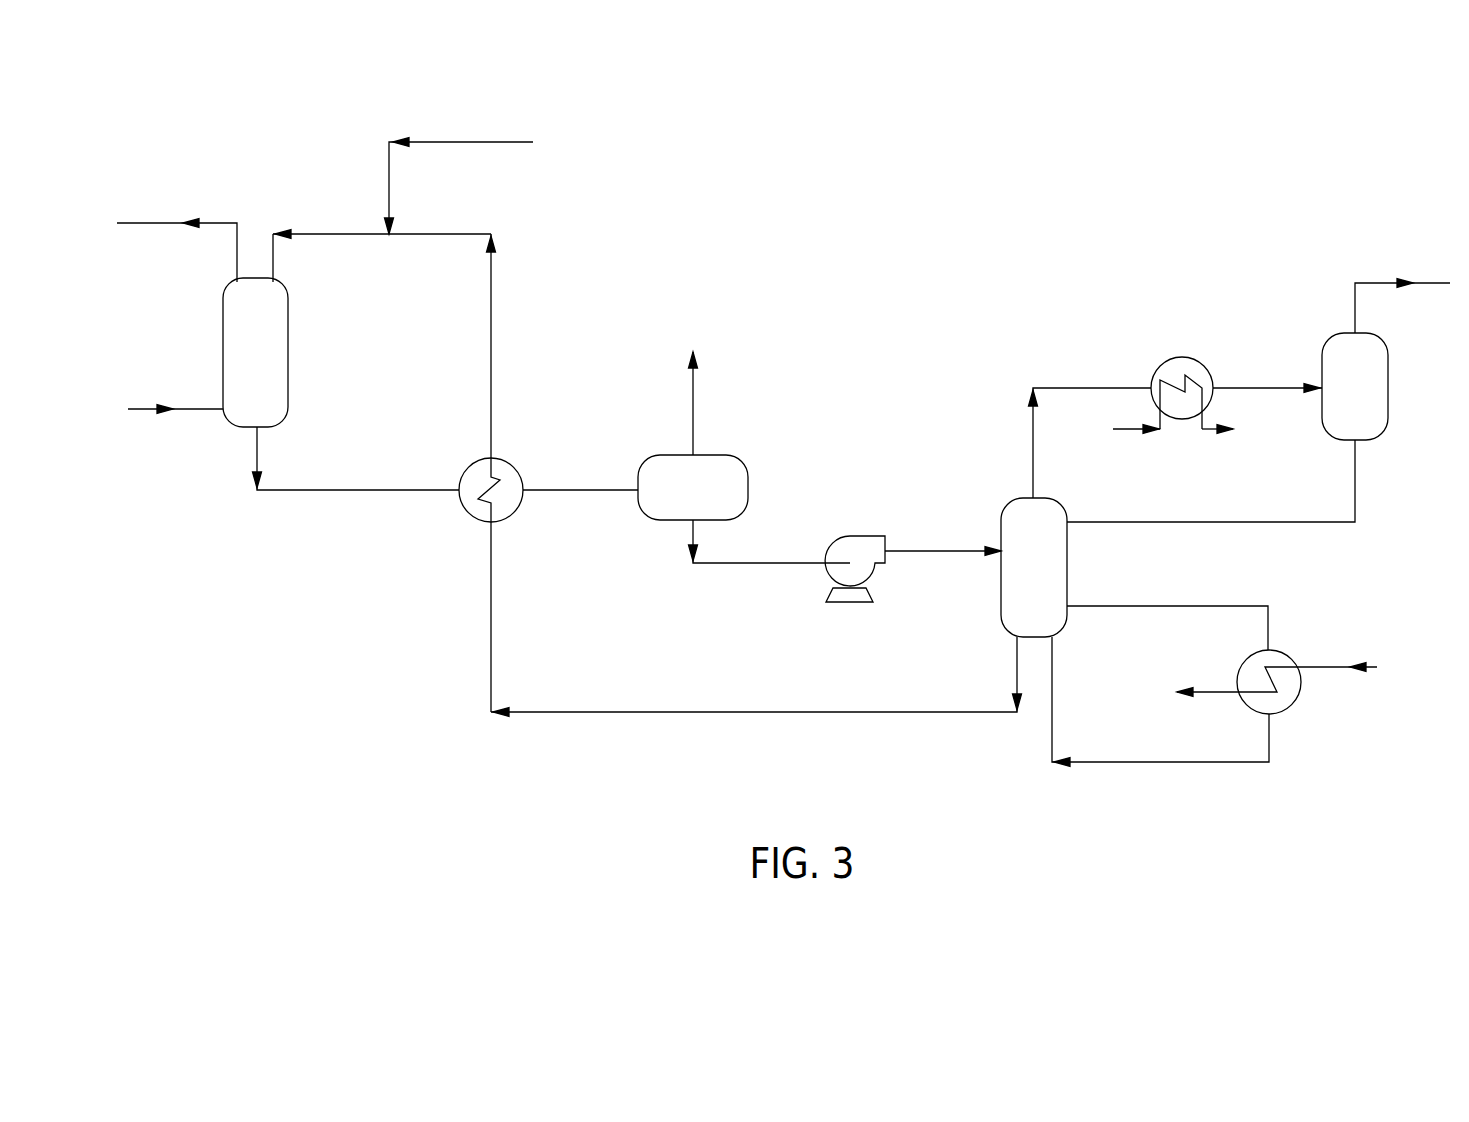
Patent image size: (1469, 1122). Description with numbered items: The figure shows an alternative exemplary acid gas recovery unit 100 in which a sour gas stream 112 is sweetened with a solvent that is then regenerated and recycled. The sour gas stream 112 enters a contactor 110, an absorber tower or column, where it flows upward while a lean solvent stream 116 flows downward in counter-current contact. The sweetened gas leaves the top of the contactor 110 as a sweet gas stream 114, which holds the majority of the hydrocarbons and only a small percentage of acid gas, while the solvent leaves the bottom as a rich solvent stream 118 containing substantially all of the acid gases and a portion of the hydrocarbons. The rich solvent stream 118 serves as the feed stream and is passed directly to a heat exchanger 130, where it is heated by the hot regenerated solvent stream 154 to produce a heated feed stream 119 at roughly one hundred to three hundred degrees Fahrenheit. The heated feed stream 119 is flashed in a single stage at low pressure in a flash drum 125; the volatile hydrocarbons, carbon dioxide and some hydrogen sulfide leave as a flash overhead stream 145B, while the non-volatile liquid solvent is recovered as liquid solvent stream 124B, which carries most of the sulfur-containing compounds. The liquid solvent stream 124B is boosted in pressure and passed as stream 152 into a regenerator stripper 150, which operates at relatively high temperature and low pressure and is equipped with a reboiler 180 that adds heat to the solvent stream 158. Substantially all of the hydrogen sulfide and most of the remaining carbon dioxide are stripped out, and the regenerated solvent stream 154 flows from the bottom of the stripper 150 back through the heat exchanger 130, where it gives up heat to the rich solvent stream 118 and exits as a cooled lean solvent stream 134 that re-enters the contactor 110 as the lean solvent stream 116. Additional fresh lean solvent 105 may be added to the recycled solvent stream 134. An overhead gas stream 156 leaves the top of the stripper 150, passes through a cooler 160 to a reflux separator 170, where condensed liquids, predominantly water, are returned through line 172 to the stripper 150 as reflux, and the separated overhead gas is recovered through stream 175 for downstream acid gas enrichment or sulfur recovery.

The acid gas recovery unit 100 is at (330, 714).
The fresh lean solvent 105 is at (479, 141).
The contactor 110 is at (288, 352).
The sour gas stream 112 is at (178, 408).
The sweet gas stream 114 is at (185, 223).
The lean solvent stream 116 is at (335, 234).
The rich solvent stream 118 is at (362, 493).
The heated feed stream 119 is at (577, 490).
The liquid solvent stream 124B is at (743, 565).
The flash drum 125 is at (748, 487).
The heat exchanger 130 is at (517, 472).
The cooled lean solvent stream 134 is at (491, 319).
The flash overhead stream 145B is at (693, 403).
The regenerator stripper 150 is at (1067, 568).
The liquid solvent stream 152 is at (910, 547).
The regenerated solvent stream 154 is at (1017, 670).
The overhead gas stream 156 is at (1033, 445).
The solvent stream 158 is at (1218, 605).
The cooler 160 is at (1173, 357).
The reflux separator 170 is at (1388, 387).
The reflux line 172 is at (1288, 520).
The overhead gas stream 175 is at (1382, 282).
The reboiler 180 is at (1280, 650).